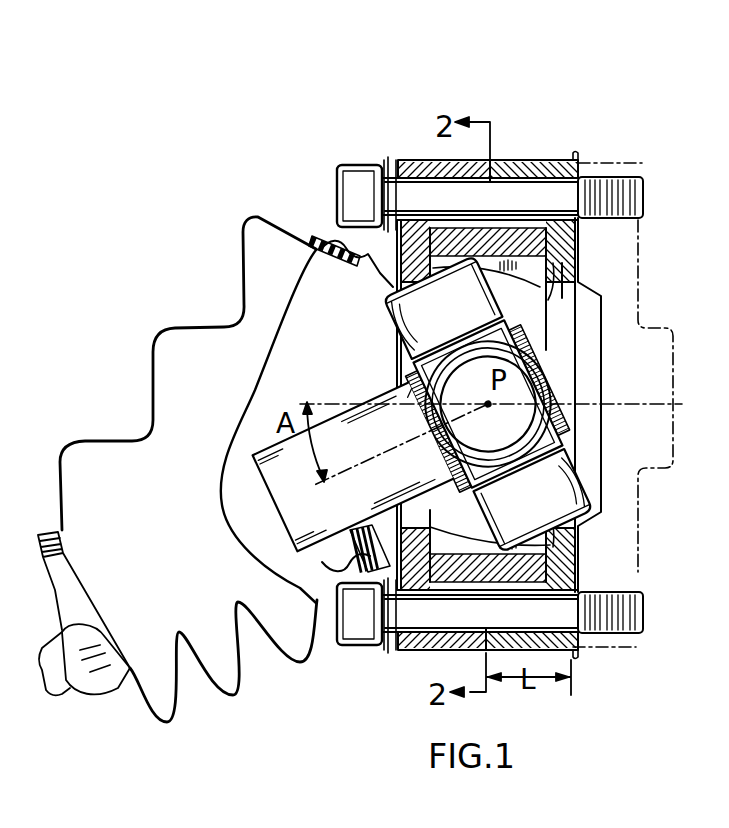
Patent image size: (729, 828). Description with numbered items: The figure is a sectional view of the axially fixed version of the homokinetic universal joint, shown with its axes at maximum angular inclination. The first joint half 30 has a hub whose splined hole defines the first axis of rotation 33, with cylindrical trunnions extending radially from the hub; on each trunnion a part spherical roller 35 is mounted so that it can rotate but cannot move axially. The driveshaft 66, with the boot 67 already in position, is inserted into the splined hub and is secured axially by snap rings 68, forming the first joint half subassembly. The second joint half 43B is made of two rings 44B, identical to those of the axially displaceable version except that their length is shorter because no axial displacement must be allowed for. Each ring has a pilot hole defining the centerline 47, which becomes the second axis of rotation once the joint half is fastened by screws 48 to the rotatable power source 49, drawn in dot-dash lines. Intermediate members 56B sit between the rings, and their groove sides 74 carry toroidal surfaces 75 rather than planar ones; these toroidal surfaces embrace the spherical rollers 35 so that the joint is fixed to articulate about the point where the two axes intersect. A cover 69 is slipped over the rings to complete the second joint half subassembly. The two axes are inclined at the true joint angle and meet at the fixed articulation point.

The first joint half 30 is at (552, 405).
The first axis of rotation 33 is at (382, 453).
The part spherical roller 35 is at (600, 500).
The second joint half 43B is at (516, 358).
The ring 44B is at (635, 102).
The centerline 47 is at (637, 404).
The screw 48 is at (480, 142).
The rotatable power source 49 is at (637, 163).
The intermediate member 56B is at (535, 242).
The driveshaft 66 is at (265, 457).
The boot 67 is at (243, 227).
The snap ring 68 is at (396, 275).
The cover 69 is at (410, 158).
The groove side 74 is at (533, 268).
The toroidal surface 75 is at (528, 305).